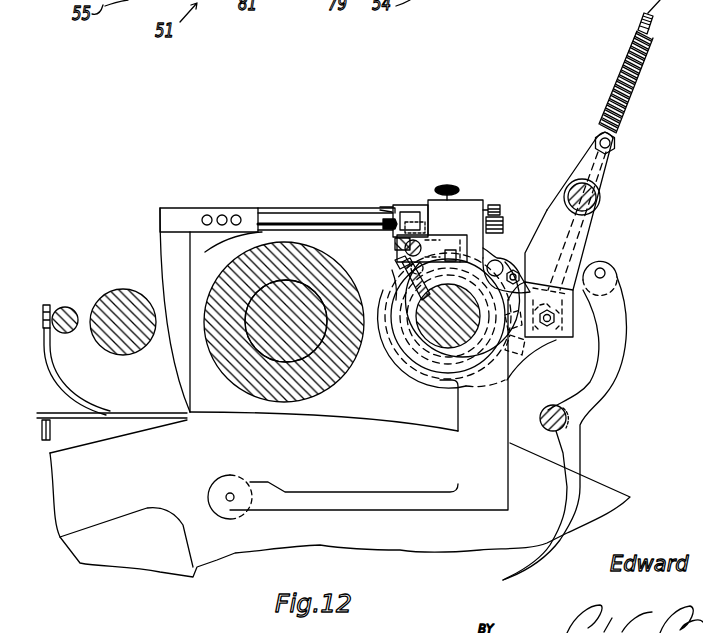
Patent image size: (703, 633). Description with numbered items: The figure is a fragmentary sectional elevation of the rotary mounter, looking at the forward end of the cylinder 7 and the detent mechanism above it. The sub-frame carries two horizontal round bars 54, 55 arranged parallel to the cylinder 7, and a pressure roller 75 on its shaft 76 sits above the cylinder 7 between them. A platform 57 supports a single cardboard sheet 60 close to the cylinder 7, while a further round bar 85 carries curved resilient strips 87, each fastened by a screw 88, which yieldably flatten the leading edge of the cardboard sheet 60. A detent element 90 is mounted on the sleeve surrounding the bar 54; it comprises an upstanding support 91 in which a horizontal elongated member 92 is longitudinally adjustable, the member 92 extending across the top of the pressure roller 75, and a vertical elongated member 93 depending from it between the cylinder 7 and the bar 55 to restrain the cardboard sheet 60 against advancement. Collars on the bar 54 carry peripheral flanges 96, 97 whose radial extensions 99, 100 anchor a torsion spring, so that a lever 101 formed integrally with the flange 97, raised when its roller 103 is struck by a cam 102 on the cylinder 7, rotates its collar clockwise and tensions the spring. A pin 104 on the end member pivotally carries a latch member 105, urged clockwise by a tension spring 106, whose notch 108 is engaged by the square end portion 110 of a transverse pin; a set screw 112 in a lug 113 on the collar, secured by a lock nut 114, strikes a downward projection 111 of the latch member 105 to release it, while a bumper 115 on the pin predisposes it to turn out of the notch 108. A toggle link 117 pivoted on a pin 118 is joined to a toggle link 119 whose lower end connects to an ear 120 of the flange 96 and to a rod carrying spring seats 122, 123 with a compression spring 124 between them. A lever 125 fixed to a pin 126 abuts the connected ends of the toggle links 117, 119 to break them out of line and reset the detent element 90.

The cylinder 7 is at (598, 478).
The elongated round bar 54 is at (422, 342).
The elongated round bar 55 is at (122, 290).
The platform 57 is at (50, 431).
The cardboard sheet 60 is at (138, 418).
The pressure roller 75 is at (276, 210).
The shaft 76 is at (240, 391).
The round bar 85 is at (65, 307).
The resilient strip 87 is at (68, 384).
The screw 88 is at (47, 306).
The detent element 90 is at (229, 196).
The upstanding support 91 is at (436, 188).
The elongated member 92 is at (290, 210).
The elongated member 93 is at (170, 188).
The peripheral flange 96 is at (442, 392).
The peripheral flange 97 is at (415, 358).
The radial extension 99 is at (527, 228).
The radial extension 100 is at (520, 243).
The lever 101 is at (350, 492).
The cam 102 is at (142, 484).
The roller 103 is at (208, 487).
The pin 104 is at (404, 222).
The latch member 105 is at (452, 237).
The tension spring 106 is at (372, 210).
The notch 108 is at (451, 184).
The square end portion 110 is at (450, 250).
The downward projection 111 is at (398, 283).
The set screw 112 is at (403, 279).
The lug 113 is at (393, 250).
The lock nut 114 is at (395, 265).
The bumper 115 is at (430, 237).
The toggle link 117 is at (580, 157).
The pin 118 is at (597, 200).
The toggle link 119 is at (618, 298).
The ear 120 is at (551, 341).
The spring seat 122 is at (656, 33).
The spring seat 123 is at (617, 140).
The compression spring 124 is at (640, 77).
The lever 125 is at (627, 357).
The pin 126 is at (580, 411).